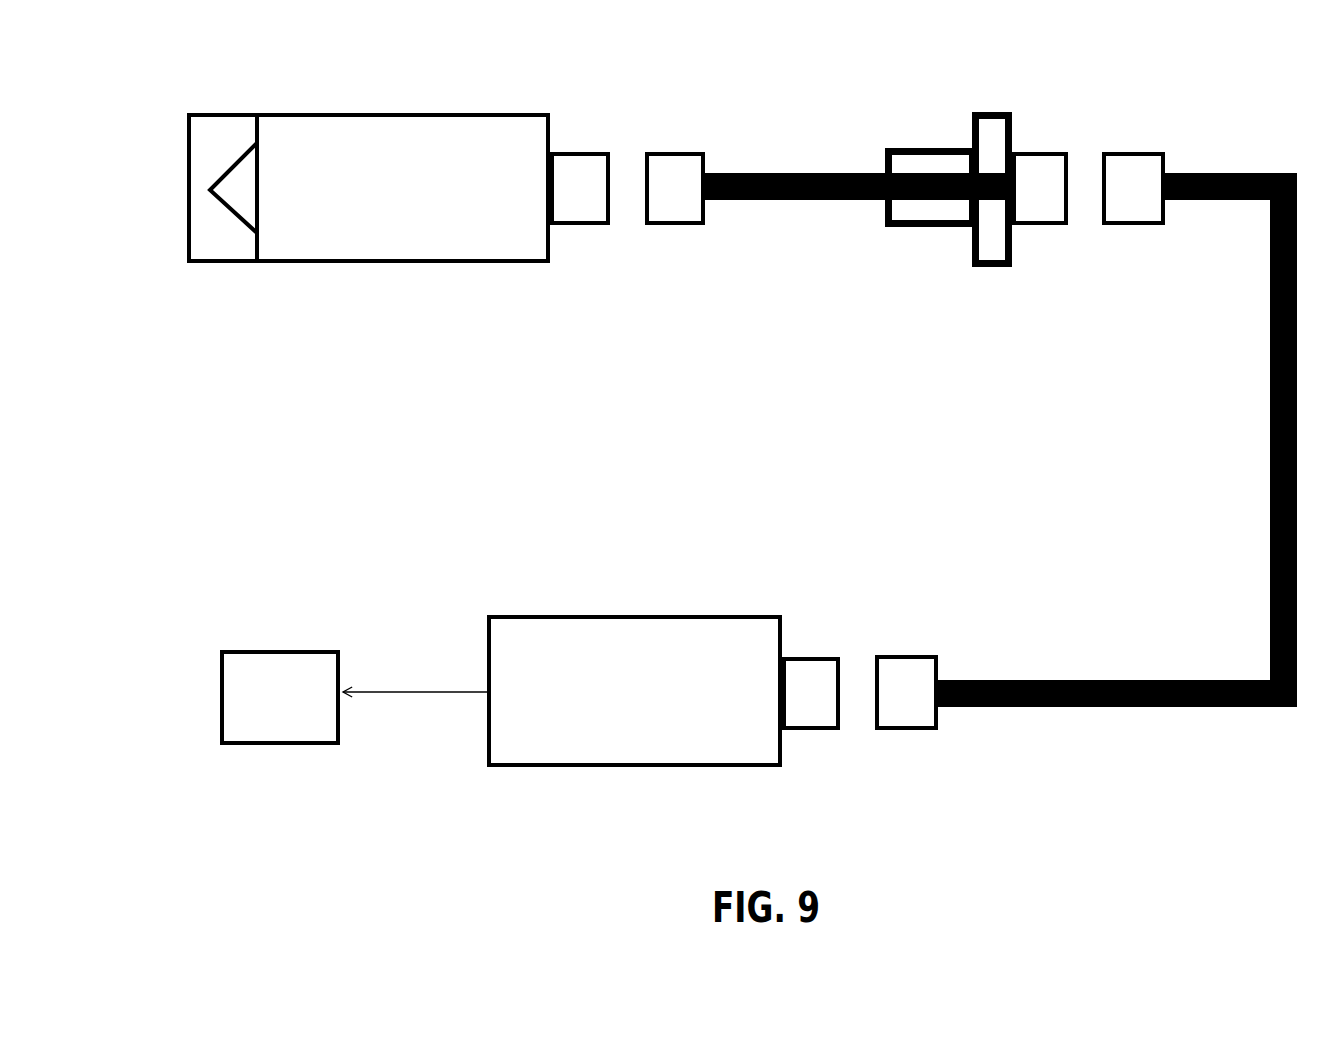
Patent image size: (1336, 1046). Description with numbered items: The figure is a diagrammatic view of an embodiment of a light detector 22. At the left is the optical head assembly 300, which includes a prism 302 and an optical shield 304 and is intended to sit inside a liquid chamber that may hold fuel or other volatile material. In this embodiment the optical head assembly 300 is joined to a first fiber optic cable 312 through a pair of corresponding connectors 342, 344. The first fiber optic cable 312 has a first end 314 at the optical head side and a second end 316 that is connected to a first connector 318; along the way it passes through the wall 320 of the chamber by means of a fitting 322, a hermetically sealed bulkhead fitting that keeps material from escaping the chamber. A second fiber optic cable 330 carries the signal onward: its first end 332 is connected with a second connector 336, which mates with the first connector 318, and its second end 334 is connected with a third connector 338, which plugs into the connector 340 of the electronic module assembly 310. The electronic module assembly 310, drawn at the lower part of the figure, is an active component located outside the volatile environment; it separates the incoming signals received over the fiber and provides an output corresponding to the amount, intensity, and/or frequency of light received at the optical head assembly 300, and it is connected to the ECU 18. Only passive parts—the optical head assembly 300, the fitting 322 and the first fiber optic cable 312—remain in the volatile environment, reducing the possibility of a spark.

The ECU 18 is at (212, 707).
The light detector 22 is at (178, 510).
The optical head assembly 300 is at (425, 83).
The prism 302 is at (235, 225).
The optical shield 304 is at (237, 111).
The electronic module assembly 310 is at (562, 775).
The first fiber optic cable 312 is at (830, 155).
The first end 314 is at (717, 165).
The second end 316 is at (909, 176).
The first connector 318 is at (1042, 140).
The wall 320 is at (973, 100).
The fitting 322 is at (878, 229).
The second fiber optic cable 330 is at (1111, 356).
The first end 332 is at (1177, 163).
The second end 334 is at (950, 655).
The second connector 336 is at (1143, 228).
The third connector 338 is at (918, 738).
The connector 340 is at (815, 637).
The connector 342 is at (582, 229).
The connector 344 is at (660, 138).